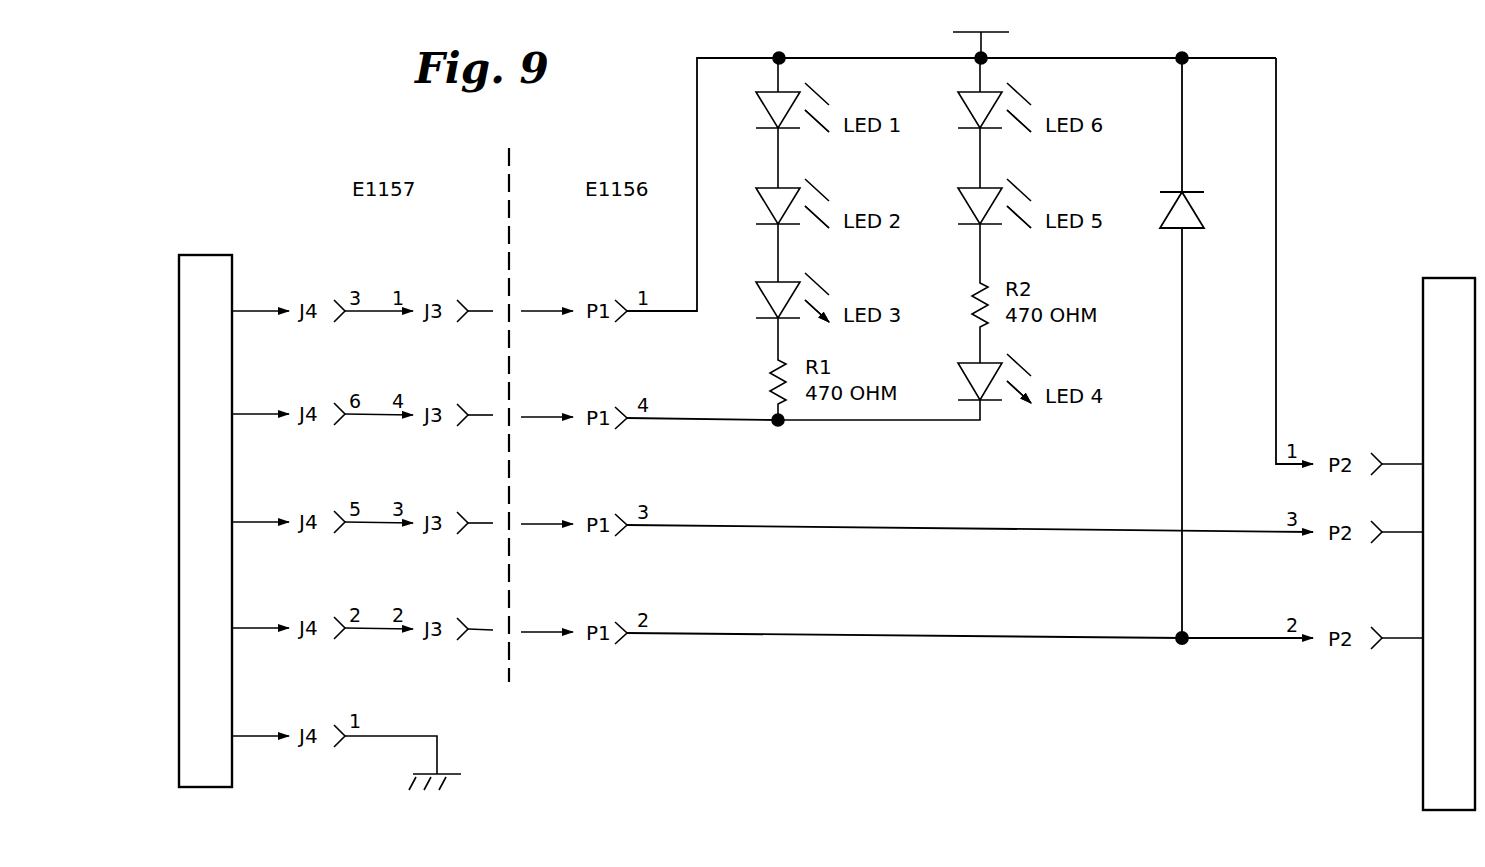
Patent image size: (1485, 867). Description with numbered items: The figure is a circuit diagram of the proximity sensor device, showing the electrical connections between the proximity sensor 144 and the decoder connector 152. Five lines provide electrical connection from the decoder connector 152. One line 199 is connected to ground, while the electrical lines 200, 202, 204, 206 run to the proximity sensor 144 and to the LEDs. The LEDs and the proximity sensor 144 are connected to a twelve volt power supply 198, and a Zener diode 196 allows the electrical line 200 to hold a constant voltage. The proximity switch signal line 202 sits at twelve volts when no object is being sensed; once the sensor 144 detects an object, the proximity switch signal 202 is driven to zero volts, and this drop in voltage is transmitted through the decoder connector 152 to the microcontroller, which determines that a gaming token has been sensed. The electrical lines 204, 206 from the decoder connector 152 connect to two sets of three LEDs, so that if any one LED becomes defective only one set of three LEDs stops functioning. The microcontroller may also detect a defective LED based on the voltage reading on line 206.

The decoder connector 152 is at (234, 270).
The proximity sensor 144 is at (1423, 287).
The twelve volt power supply 198 is at (1010, 22).
The Zener diode 196 is at (1197, 212).
The electrical line 206 is at (662, 310).
The electrical line 204 is at (705, 421).
The proximity switch signal line 202 is at (727, 528).
The electrical line 200 is at (716, 636).
The ground line 199 is at (377, 740).